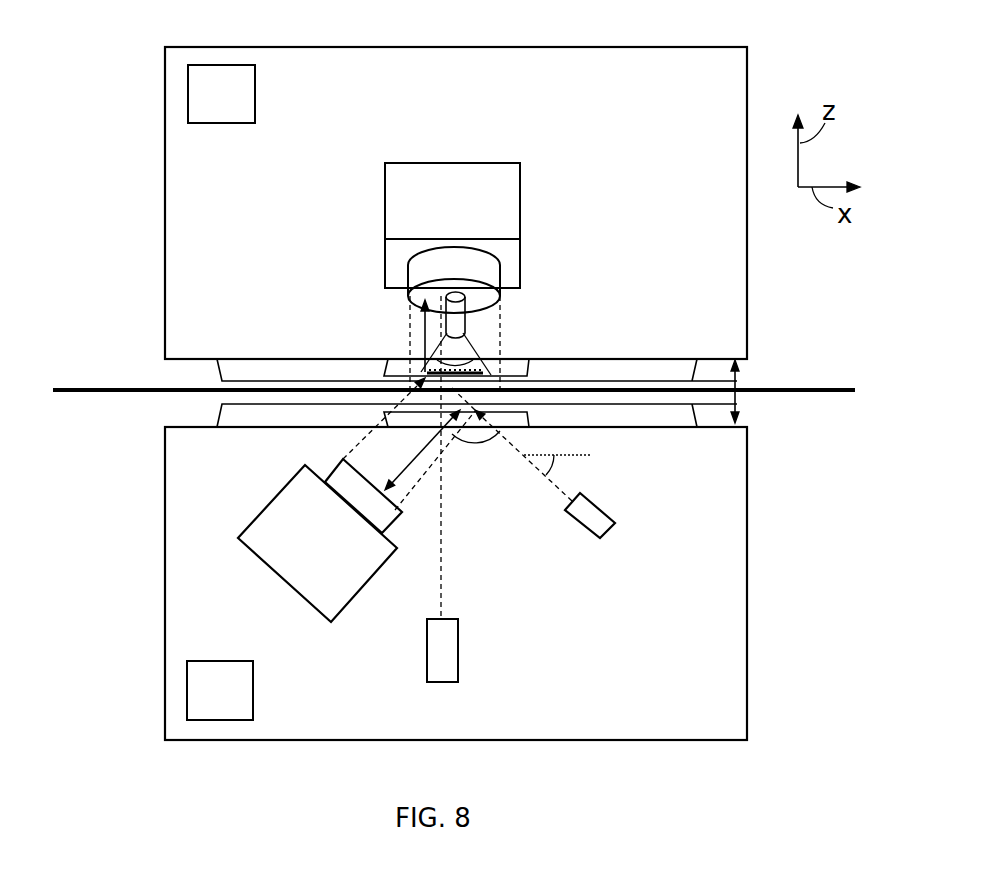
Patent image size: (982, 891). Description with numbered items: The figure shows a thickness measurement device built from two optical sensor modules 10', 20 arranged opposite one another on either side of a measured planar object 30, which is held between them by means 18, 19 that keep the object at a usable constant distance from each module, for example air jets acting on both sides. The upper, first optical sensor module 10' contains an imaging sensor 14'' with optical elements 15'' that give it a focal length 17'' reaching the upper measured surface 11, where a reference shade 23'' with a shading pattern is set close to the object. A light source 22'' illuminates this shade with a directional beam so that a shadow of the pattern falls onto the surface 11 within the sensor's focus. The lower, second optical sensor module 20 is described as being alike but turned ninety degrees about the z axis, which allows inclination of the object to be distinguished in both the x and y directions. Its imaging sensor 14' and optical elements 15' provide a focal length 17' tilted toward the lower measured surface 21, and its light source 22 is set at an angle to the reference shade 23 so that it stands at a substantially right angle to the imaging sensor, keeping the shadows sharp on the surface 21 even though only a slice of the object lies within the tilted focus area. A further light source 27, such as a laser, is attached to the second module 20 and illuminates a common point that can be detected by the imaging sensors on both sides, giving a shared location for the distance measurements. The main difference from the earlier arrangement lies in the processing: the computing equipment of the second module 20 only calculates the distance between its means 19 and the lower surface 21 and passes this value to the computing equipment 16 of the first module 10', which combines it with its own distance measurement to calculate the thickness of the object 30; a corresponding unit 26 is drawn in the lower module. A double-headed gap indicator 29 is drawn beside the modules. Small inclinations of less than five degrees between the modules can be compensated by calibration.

The first optical sensor module 10' is at (480, 185).
The second optical sensor module 20 is at (747, 720).
The computing equipment 16 is at (256, 112).
The control unit 26 is at (253, 708).
The imaging sensor 14'' is at (482, 203).
The optical elements 15'' is at (500, 268).
The light source 22'' is at (497, 327).
The focal length 17'' is at (394, 330).
The reference shade 23'' is at (419, 346).
The light source 27 is at (458, 672).
The measured planar object 30 is at (89, 390).
The constant distance means 18 is at (220, 382).
The constant distance means 19 is at (220, 400).
The gap distance 29 is at (737, 380).
The measured surface 11 is at (830, 385).
The measured surface 21 is at (837, 398).
The imaging sensor 14' is at (317, 565).
The optical elements 15' is at (400, 476).
The focal length 17' is at (439, 463).
The light source 22 is at (533, 478).
The reference shade 23 is at (522, 435).